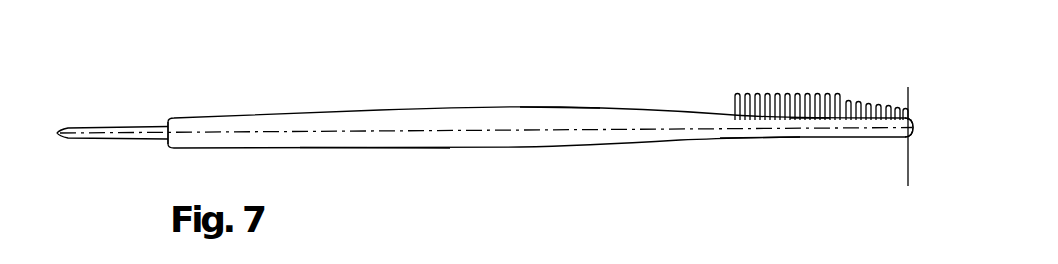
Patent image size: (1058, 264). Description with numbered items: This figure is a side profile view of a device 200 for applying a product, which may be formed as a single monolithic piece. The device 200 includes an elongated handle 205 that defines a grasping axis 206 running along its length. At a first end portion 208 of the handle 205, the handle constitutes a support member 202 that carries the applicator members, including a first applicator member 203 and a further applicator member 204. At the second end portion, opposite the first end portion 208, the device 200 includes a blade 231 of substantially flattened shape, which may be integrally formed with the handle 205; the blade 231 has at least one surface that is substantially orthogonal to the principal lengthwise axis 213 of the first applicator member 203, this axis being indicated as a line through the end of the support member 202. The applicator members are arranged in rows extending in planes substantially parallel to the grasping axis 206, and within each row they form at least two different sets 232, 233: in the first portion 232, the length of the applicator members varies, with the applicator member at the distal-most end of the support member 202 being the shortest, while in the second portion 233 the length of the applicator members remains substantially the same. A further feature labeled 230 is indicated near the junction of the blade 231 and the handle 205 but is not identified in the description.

The device 200 is at (428, 90).
The handle body end 230 is at (187, 106).
The blade 231 is at (115, 139).
The handle 205 is at (403, 138).
The grasping axis 206 is at (587, 127).
The first end portion 208 is at (770, 146).
The support member 202 is at (808, 132).
The applicator member 204 is at (908, 128).
The principal lengthwise axis 213 is at (908, 168).
The first applicator member 203 is at (906, 110).
The second portion of applicator members 233 is at (842, 86).
The first portion of applicator members 232 is at (912, 86).